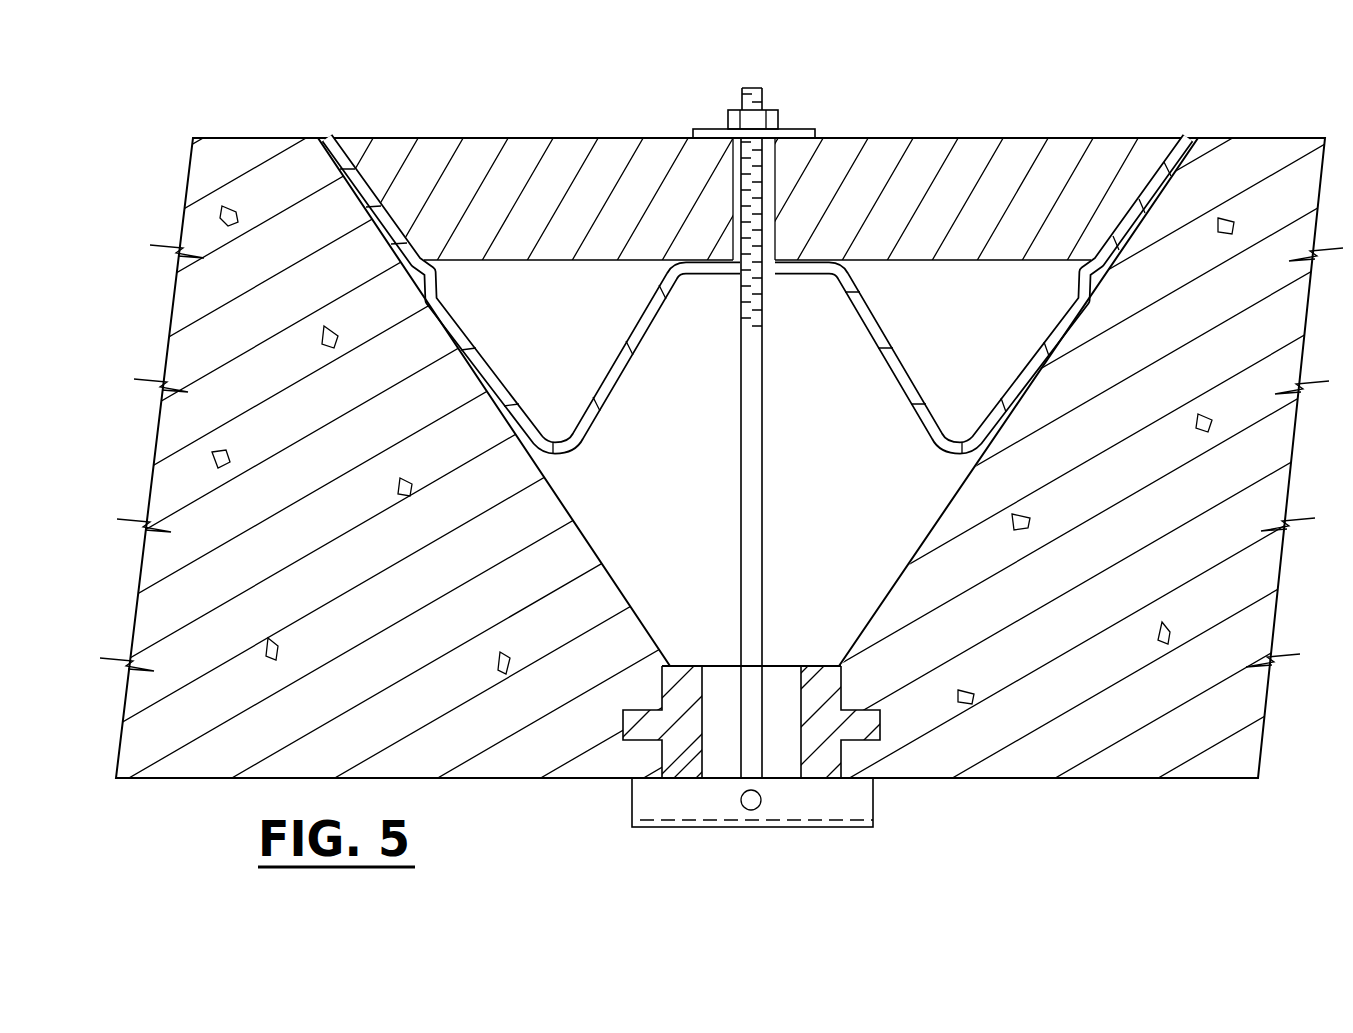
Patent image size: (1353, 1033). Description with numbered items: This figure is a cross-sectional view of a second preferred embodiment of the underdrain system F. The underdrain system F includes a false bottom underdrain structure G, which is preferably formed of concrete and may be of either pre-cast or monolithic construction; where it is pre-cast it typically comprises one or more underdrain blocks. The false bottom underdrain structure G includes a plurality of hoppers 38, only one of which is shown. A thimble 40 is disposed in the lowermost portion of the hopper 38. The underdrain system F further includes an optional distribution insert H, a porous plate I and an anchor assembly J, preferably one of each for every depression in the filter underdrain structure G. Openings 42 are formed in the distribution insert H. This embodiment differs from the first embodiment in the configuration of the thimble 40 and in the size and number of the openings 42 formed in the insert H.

The false bottom underdrain structure G is at (255, 128).
The underdrain system F is at (378, 100).
The porous plate I is at (994, 125).
The anchor assembly J is at (735, 78).
The opening 42 is at (623, 347).
The distribution insert H is at (878, 306).
The hopper 38 is at (575, 560).
The thimble 40 is at (648, 758).